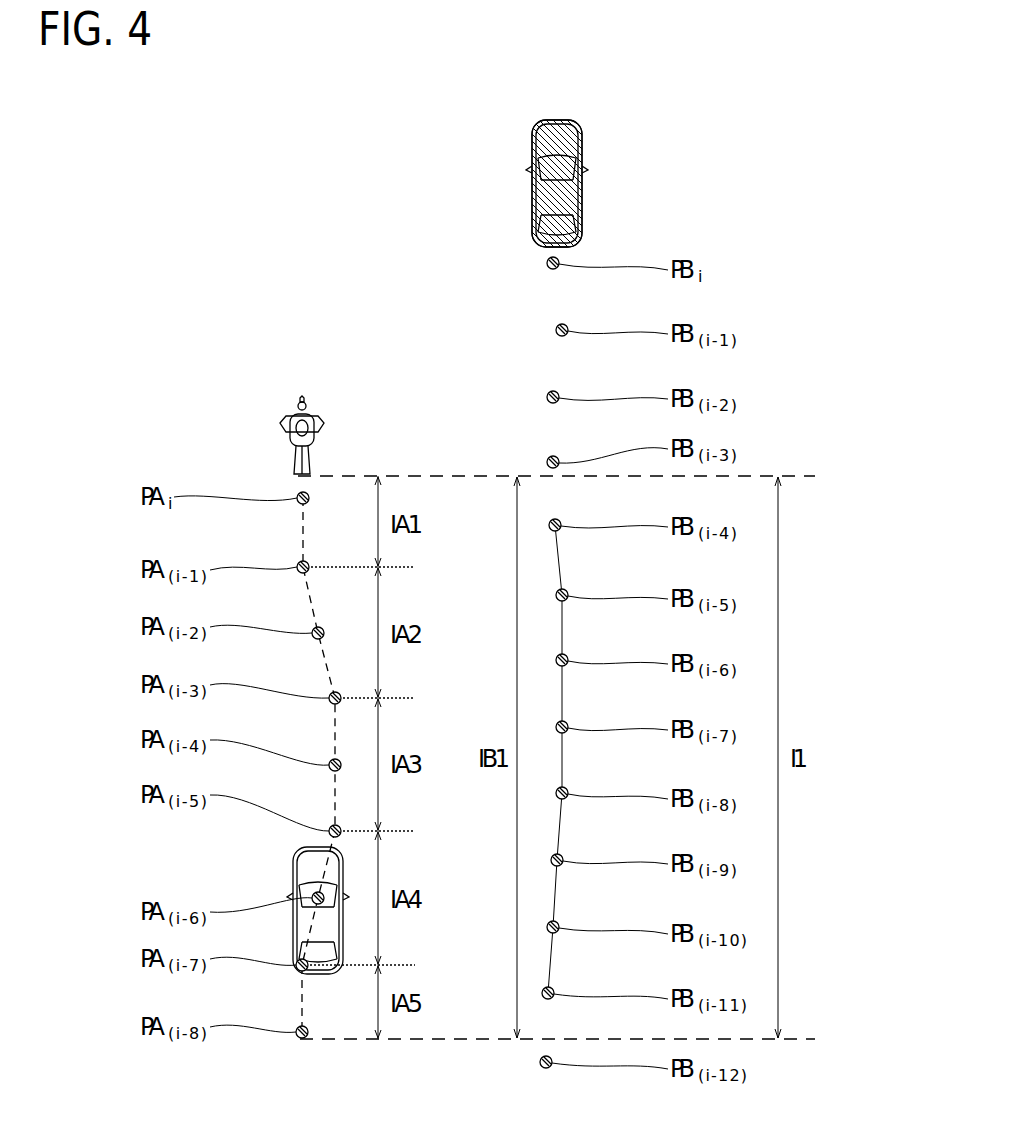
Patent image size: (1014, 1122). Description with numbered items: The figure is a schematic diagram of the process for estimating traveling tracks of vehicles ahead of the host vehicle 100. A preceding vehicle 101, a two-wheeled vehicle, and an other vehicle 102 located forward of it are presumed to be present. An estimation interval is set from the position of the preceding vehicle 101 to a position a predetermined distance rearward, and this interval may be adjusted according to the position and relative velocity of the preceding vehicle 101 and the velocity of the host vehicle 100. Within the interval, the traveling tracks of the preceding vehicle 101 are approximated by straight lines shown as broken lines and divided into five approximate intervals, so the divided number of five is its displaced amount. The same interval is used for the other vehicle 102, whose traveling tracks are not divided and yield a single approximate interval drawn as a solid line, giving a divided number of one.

The host vehicle 100 is at (279, 901).
The preceding vehicle 101 is at (269, 435).
The other vehicle 102 is at (559, 155).